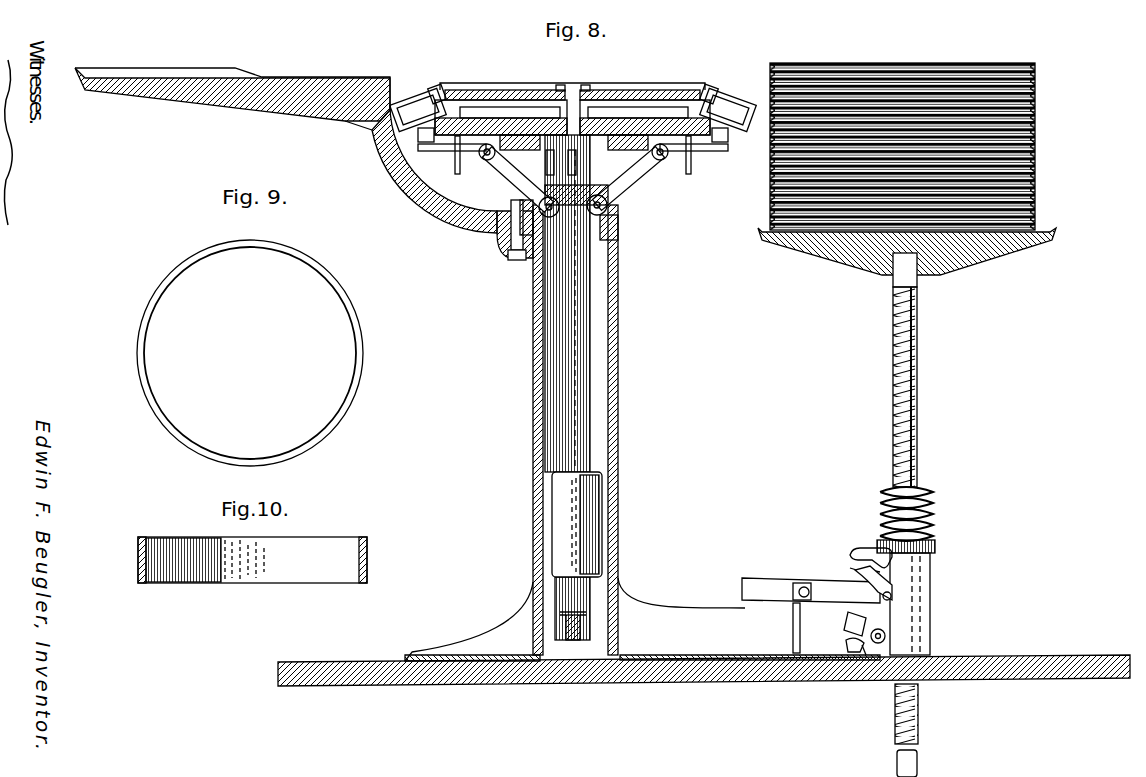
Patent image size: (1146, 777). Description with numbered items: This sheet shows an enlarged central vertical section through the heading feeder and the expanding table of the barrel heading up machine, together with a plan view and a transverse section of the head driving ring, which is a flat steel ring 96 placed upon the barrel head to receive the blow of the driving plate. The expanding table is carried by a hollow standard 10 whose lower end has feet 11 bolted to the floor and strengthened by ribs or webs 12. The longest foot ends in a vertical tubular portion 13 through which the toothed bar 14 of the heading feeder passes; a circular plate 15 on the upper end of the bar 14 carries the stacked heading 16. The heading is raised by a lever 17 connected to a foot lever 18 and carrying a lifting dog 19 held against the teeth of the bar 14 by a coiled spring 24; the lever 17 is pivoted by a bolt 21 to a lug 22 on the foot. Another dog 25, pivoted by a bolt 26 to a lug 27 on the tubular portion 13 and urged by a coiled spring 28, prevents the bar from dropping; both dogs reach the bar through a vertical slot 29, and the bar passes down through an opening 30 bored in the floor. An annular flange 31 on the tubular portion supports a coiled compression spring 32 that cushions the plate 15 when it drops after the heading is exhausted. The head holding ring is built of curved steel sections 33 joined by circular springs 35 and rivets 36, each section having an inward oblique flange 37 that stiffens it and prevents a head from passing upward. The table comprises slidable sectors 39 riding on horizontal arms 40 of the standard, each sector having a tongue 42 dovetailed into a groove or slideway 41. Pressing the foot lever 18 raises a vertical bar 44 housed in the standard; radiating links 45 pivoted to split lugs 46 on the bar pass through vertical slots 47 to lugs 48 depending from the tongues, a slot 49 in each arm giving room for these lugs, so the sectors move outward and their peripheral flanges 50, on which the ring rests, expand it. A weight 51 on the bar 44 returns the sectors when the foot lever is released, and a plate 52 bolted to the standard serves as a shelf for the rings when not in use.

In FIG. 8, the hollow standard 10 is at (619, 389).
In FIG. 8, the feet 11 is at (458, 659).
In FIG. 8, the strengthening ribs or webs 12 is at (575, 619).
In FIG. 8, the vertical tubular portion 13 is at (924, 599).
In FIG. 8, the toothed bar 14 is at (918, 406).
In FIG. 8, the circular plate 15 is at (780, 246).
In FIG. 8, the heading 16 is at (615, 92).
In FIG. 8, the lever 17 is at (811, 591).
In FIG. 8, the foot lever 18 is at (582, 631).
In FIG. 8, the lifting dog 19 is at (876, 597).
In FIG. 8, the bolt 21 is at (804, 586).
In FIG. 8, the lug 22 is at (793, 618).
In FIG. 8, the coiled spring 24 is at (850, 568).
In FIG. 8, the dog 25 is at (848, 623).
In FIG. 8, the bolt 26 is at (893, 636).
In FIG. 8, the lug 27 is at (866, 661).
In FIG. 8, the coiled spring 28 is at (846, 646).
In FIG. 8, the vertical slot 29 is at (880, 560).
In FIG. 8, the opening 30 is at (928, 672).
In FIG. 8, the annular flange 31 is at (936, 549).
In FIG. 8, the coiled compression spring 32 is at (923, 514).
In FIG. 8, the curved steel sections 33 is at (455, 85).
In FIG. 8, the circular springs 35 is at (573, 109).
In FIG. 8, the rivets 36 is at (435, 86).
In FIG. 8, the flange 37 is at (510, 90).
In FIG. 8, the slidable sectors 39 is at (530, 100).
In FIG. 8, the horizontal arms 40 is at (432, 151).
In FIG. 8, the groove or slideway 41 is at (418, 135).
In FIG. 8, the tongue 42 is at (458, 160).
In FIG. 8, the vertical bar 44 is at (577, 329).
In FIG. 8, the radiating links 45 is at (515, 181).
In FIG. 8, the split lugs 46 is at (612, 229).
In FIG. 8, the vertical slots 47 is at (583, 187).
In FIG. 8, the lugs 48 is at (668, 156).
In FIG. 8, the slot 49 is at (398, 178).
In FIG. 8, the peripheral flanges 50 is at (368, 135).
In FIG. 8, the weight 51 is at (577, 524).
In FIG. 8, the plate 52 is at (232, 86).
In FIG. 9, the flat steel ring 96 is at (250, 353).
In FIG. 10, the flat steel ring 96 is at (252, 560).